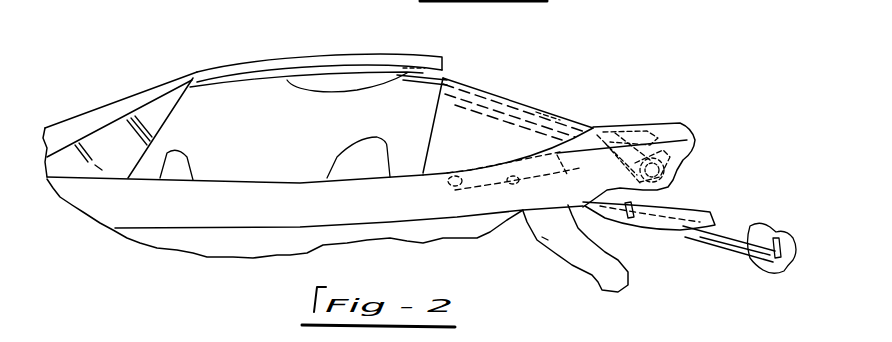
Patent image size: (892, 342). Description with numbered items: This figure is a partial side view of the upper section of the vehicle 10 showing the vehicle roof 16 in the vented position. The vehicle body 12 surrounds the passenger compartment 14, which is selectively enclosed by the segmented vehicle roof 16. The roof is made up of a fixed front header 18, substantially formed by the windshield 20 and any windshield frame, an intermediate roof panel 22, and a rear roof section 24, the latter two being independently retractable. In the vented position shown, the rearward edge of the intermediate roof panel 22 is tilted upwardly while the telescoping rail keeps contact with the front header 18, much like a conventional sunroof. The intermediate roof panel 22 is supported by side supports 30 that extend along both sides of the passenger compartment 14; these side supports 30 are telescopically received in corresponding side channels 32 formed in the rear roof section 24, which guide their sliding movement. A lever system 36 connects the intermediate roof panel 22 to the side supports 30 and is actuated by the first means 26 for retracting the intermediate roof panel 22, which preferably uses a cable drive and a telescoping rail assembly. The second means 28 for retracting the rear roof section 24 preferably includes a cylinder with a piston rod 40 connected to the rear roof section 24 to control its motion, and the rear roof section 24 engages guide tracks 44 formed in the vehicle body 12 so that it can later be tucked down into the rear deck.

The vehicle 10 is at (150, 255).
The vehicle body 12 is at (685, 125).
The passenger compartment 14 is at (236, 163).
The vehicle roof 16 is at (452, 72).
The front header 18 is at (92, 163).
The windshield 20 is at (60, 128).
The intermediate roof panel 22 is at (325, 50).
The rear roof section 24 is at (476, 130).
The first means for retracting 26 is at (667, 162).
The second means for retracting 28 is at (751, 227).
The side supports 30 is at (423, 83).
The side channels 32 is at (475, 130).
The lever system 36 is at (288, 80).
The piston rod 40 is at (585, 207).
The guide tracks 44 is at (548, 238).